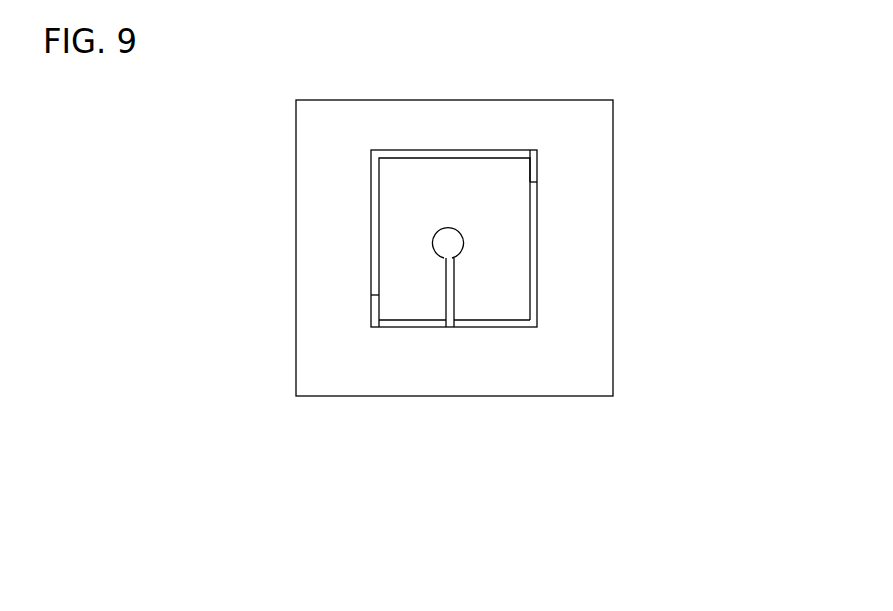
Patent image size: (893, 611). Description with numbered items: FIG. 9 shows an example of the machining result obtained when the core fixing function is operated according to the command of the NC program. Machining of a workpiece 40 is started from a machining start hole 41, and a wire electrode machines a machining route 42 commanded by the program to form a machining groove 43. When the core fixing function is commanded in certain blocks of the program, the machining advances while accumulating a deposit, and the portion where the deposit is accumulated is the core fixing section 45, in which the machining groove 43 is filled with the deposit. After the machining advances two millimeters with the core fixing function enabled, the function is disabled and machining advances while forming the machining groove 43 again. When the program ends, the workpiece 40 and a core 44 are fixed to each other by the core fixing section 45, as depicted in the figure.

The workpiece 40 is at (317, 147).
The machining start hole 41 is at (466, 235).
The machining route 42 is at (458, 336).
The machining groove 43 is at (548, 275).
The core 44 is at (482, 294).
The core fixing section 45 is at (514, 175).